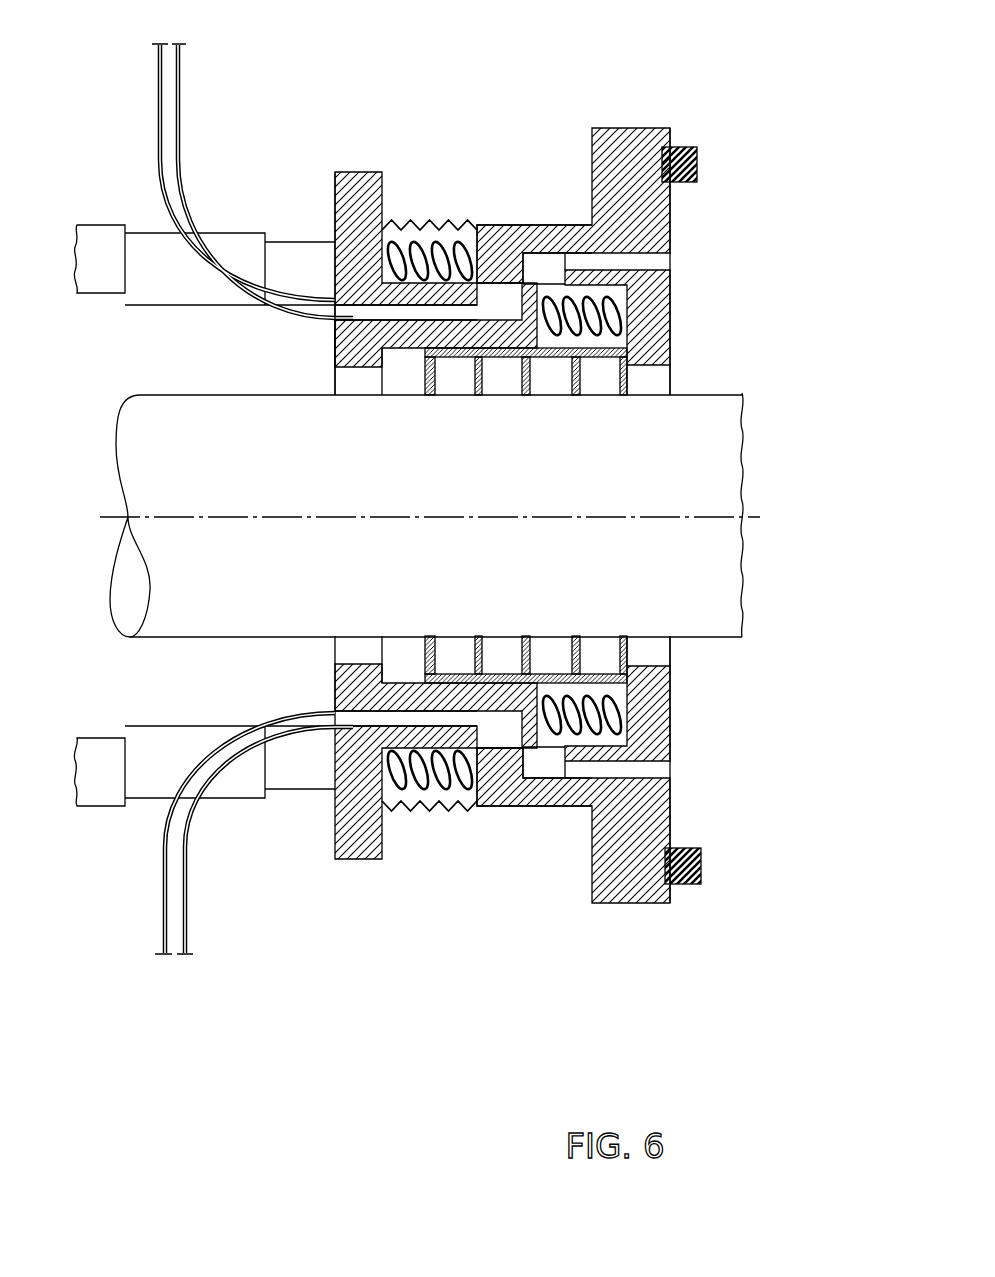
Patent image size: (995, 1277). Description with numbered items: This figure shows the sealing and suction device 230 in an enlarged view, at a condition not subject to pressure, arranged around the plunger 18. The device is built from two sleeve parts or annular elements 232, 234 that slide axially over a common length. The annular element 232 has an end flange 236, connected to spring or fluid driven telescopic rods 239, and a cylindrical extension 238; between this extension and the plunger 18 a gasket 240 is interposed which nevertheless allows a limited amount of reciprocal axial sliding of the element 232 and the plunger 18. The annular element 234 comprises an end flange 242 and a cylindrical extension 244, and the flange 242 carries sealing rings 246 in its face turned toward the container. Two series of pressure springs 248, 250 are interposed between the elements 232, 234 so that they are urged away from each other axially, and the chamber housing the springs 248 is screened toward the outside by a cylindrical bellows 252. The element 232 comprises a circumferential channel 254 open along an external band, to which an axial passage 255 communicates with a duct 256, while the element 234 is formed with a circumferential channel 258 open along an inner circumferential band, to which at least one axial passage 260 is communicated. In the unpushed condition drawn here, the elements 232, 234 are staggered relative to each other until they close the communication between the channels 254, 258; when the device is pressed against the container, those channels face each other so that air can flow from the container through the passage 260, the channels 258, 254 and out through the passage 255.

The plunger 18 is at (396, 492).
The sealing and suction device 230 is at (500, 925).
The annular element 232 is at (328, 215).
The annular element 234 is at (660, 118).
The end flange 236 is at (360, 190).
The cylindrical extension 238 is at (440, 290).
The telescopic rods 239 is at (148, 226).
The gasket 240 is at (423, 367).
The end flange 242 is at (633, 155).
The cylindrical extension 244 is at (553, 240).
The sealing rings 246 is at (688, 884).
The pressure springs 248 is at (430, 810).
The pressure springs 250 is at (600, 690).
The cylindrical bellows 252 is at (410, 222).
The circumferential channel 254 is at (503, 717).
The axial passage 255 is at (390, 311).
The duct 256 is at (173, 97).
The circumferential channel 258 is at (548, 770).
The axial passage 260 is at (645, 770).